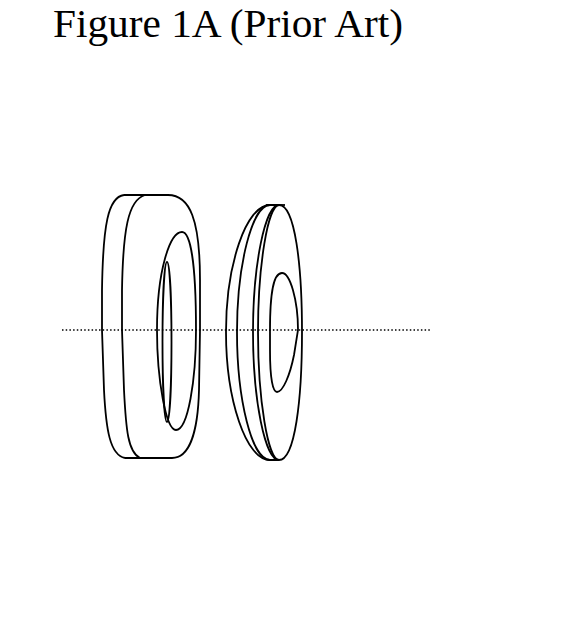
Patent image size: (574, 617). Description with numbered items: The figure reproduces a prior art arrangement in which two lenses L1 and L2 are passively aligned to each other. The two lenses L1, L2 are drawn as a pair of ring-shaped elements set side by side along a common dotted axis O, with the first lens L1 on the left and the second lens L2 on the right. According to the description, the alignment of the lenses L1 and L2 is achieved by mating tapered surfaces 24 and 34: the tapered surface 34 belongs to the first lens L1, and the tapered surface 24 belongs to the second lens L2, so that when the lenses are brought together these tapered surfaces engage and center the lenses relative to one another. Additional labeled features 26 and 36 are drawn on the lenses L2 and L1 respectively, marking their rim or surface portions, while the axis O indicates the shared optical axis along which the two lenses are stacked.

The tapered surface 24 is at (237, 243).
The front surface of second lens 26 is at (277, 207).
The tapered surface 34 is at (177, 395).
The rim of first lens 36 is at (137, 198).
The optical axis O is at (352, 329).
The lens L1 is at (147, 438).
The lens L2 is at (273, 427).